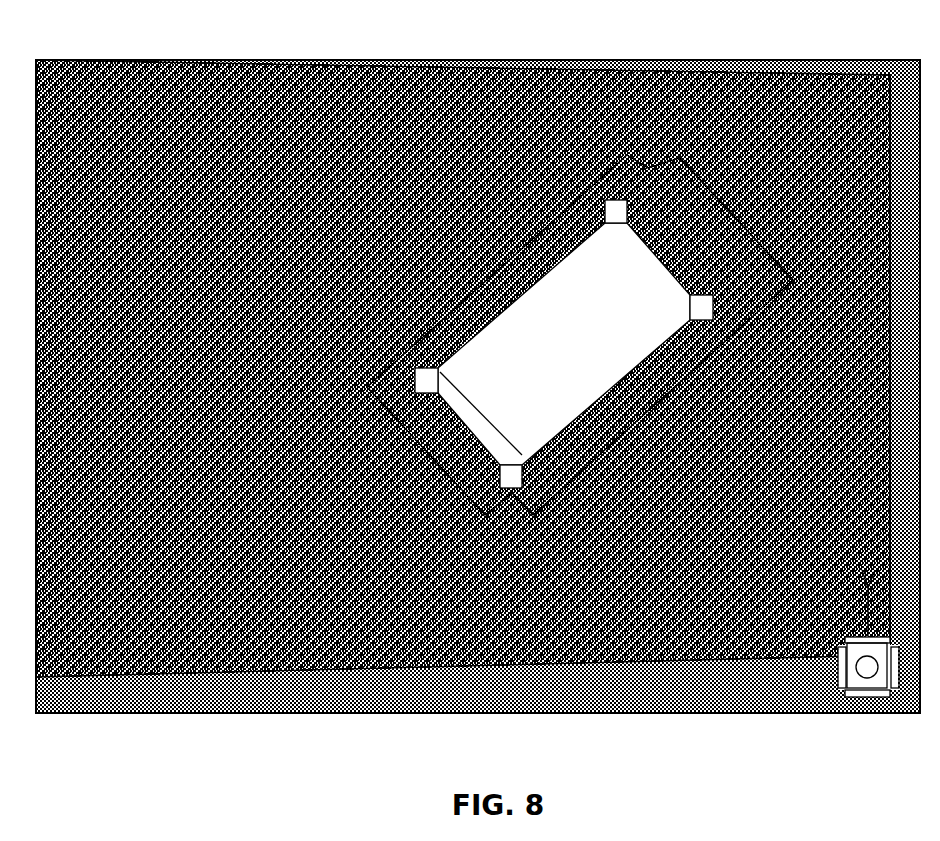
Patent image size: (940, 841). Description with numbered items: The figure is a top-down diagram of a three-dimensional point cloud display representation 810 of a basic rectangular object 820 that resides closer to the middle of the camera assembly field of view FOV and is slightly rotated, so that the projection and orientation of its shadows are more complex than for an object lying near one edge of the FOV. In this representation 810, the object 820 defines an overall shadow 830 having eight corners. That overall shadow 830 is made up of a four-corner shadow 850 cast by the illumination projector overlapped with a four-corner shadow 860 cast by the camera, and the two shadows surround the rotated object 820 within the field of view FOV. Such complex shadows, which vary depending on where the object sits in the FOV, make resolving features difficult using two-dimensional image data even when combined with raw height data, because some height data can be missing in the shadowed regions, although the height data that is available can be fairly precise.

The representation 810 is at (720, 720).
The basic object 820 is at (551, 350).
The overall shadow 830 is at (490, 314).
The four-corner shadow 850 is at (590, 190).
The four-corner shadow 860 is at (714, 188).
The field of view FOV is at (330, 720).